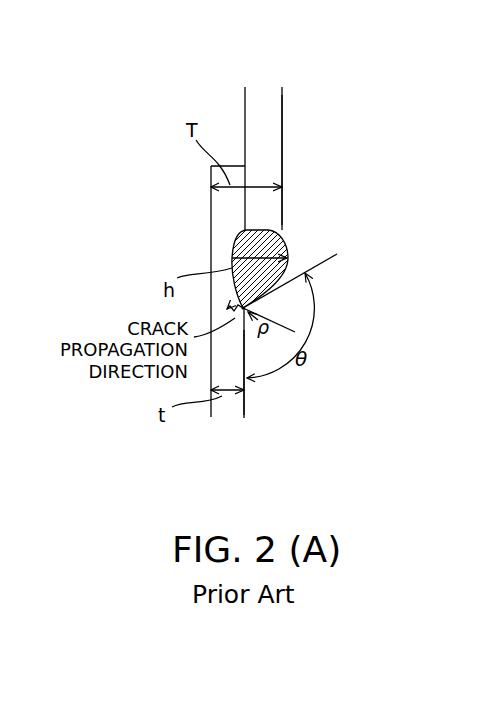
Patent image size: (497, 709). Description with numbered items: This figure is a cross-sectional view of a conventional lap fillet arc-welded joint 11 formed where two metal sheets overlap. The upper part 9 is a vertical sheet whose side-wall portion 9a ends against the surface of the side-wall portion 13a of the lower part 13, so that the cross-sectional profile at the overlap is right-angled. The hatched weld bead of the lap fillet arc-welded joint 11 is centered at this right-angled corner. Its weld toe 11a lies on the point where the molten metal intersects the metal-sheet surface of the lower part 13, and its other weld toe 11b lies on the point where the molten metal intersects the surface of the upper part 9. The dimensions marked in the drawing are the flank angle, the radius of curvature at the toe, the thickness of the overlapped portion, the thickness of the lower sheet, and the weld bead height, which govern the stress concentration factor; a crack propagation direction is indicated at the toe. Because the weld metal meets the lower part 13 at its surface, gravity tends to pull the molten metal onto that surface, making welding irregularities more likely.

The upper part 9 is at (266, 98).
The side-wall portion of the upper part 9a is at (283, 110).
The lap fillet arc-welded joint 11 is at (411, 106).
The weld toe 11a is at (245, 308).
The weld toe 11b is at (284, 233).
The lower part 13 is at (225, 412).
The side-wall portion of the lower part 13a is at (246, 402).